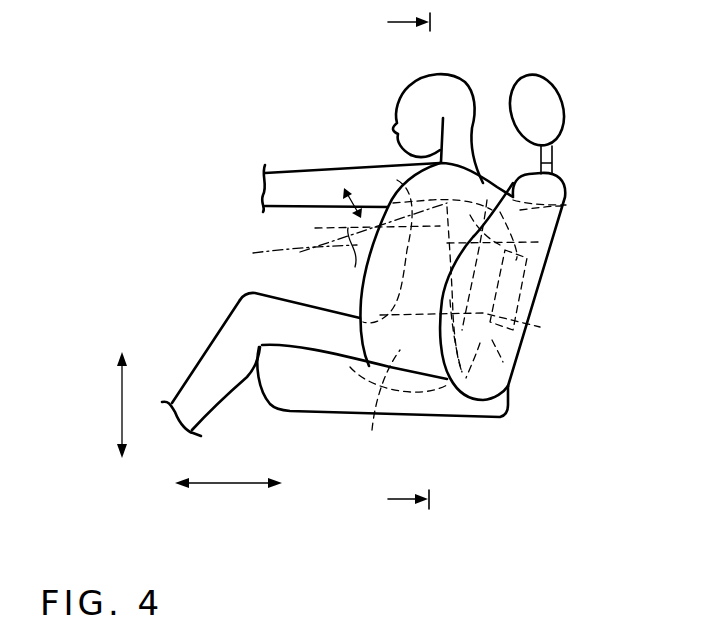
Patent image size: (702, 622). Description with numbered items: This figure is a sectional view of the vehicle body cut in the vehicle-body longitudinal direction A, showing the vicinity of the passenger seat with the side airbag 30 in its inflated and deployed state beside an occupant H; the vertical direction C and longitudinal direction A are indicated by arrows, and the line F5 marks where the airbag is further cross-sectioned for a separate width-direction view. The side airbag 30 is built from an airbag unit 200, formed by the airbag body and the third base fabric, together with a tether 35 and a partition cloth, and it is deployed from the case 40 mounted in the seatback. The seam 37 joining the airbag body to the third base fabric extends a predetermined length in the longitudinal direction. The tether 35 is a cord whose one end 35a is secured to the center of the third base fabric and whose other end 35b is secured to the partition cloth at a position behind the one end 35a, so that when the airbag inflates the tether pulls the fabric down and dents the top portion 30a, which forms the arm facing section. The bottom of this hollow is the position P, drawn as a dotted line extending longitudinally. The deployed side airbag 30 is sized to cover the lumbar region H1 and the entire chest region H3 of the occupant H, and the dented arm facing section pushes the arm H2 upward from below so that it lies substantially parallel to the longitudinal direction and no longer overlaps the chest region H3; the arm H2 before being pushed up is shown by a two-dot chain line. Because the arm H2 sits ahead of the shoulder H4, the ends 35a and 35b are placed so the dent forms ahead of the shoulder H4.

The side airbag 30 is at (348, 290).
The top portion of the side airbag 30a is at (503, 187).
The tether 35 is at (520, 245).
The one end of the tether 35a is at (560, 203).
The other end of the tether 35b is at (503, 323).
The seam 37 is at (492, 187).
The case 40 is at (503, 283).
The airbag unit 200 is at (373, 346).
The occupant H is at (450, 70).
The lumbar region H1 is at (378, 405).
The arm H2 is at (303, 172).
The chest region H3 is at (362, 239).
The shoulder H4 is at (447, 173).
The bottom position of the hollow P is at (445, 200).
The vertical direction C is at (112, 404).
The vehicle-body longitudinal direction A is at (228, 485).
The section line F5- F5 is at (404, 273).